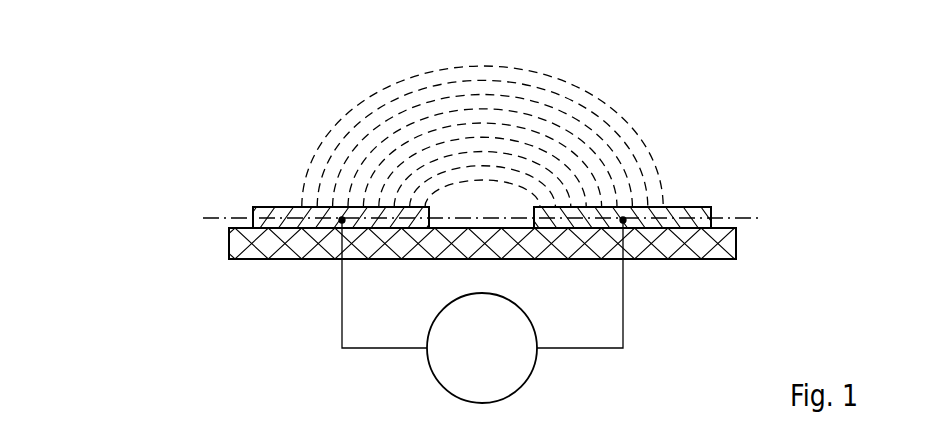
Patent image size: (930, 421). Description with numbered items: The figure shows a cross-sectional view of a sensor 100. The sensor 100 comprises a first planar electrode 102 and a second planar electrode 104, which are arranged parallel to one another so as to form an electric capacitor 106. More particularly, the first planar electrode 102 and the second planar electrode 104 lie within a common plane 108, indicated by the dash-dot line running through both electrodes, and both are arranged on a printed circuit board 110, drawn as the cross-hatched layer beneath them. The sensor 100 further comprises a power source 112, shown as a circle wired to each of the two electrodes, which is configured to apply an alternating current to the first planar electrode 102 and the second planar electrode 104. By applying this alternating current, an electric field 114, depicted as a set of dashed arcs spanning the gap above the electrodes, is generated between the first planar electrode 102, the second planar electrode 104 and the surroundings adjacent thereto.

The sensor 100 is at (675, 142).
The first planar electrode 102 is at (703, 208).
The second planar electrode 104 is at (259, 209).
The electric capacitor 106 is at (131, 198).
The common plane 108 is at (756, 222).
The printed circuit board 110 is at (228, 245).
The power source 112 is at (500, 363).
The electric field 114 is at (575, 102).